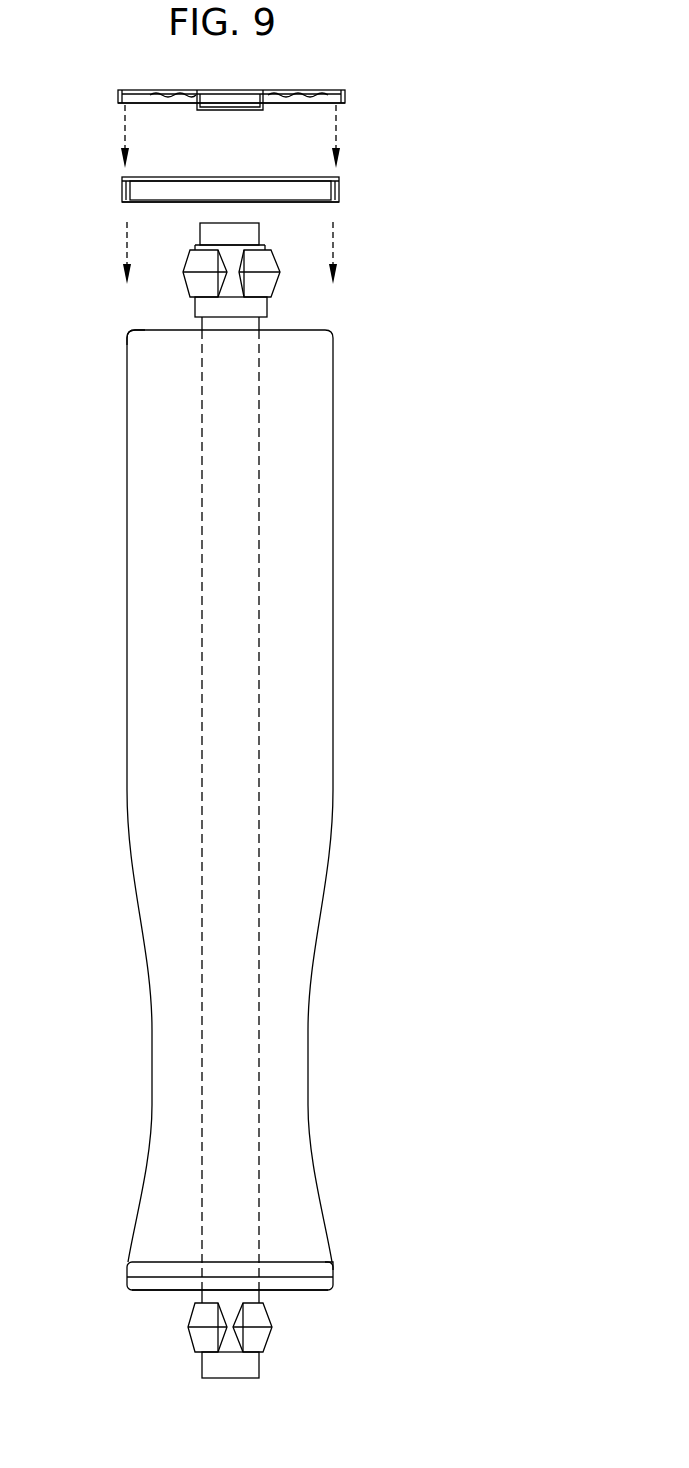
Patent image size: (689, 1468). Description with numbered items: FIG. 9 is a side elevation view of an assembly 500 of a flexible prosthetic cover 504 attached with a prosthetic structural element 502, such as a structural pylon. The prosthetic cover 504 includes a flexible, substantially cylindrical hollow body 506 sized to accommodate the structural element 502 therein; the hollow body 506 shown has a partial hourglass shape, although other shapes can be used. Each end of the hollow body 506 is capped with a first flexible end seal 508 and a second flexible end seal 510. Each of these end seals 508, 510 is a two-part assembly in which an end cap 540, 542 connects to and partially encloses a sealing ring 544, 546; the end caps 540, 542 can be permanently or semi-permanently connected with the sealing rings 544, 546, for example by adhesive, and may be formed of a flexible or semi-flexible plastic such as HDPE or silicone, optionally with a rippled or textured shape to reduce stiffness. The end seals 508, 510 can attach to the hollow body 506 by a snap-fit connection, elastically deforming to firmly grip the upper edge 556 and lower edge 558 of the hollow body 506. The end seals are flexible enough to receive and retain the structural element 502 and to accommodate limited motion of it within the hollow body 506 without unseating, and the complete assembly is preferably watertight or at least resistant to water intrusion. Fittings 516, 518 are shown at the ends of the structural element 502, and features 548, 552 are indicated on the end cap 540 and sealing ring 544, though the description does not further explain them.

The assembly 500 is at (398, 100).
The prosthetic structural element 502 is at (262, 385).
The flexible prosthetic cover 504 is at (424, 411).
The hollow body 506 is at (334, 635).
The first flexible end seal 508 is at (416, 142).
The second flexible end seal 510 is at (372, 1274).
The upper fitting 516 is at (282, 275).
The lower fitting 518 is at (257, 1335).
The end cap 540 is at (104, 76).
The end cap 542 is at (130, 1290).
The sealing ring 544 is at (107, 163).
The sealing ring 546 is at (128, 1265).
The upper plate bottom surface 548 is at (118, 103).
The upper gasket bottom surface 552 is at (122, 201).
The upper edge 556 is at (128, 330).
The lower edge 558 is at (334, 1262).